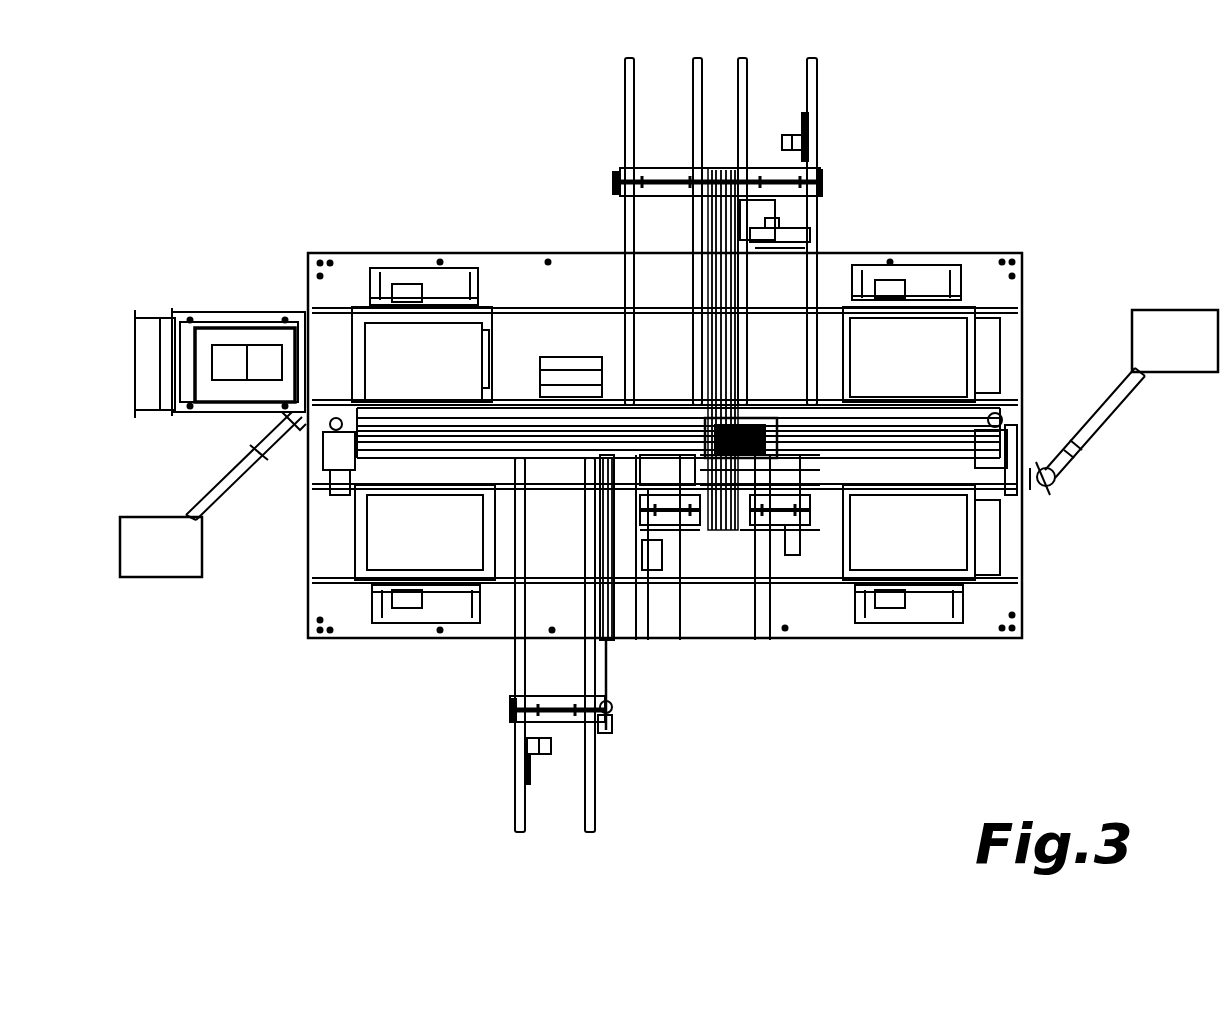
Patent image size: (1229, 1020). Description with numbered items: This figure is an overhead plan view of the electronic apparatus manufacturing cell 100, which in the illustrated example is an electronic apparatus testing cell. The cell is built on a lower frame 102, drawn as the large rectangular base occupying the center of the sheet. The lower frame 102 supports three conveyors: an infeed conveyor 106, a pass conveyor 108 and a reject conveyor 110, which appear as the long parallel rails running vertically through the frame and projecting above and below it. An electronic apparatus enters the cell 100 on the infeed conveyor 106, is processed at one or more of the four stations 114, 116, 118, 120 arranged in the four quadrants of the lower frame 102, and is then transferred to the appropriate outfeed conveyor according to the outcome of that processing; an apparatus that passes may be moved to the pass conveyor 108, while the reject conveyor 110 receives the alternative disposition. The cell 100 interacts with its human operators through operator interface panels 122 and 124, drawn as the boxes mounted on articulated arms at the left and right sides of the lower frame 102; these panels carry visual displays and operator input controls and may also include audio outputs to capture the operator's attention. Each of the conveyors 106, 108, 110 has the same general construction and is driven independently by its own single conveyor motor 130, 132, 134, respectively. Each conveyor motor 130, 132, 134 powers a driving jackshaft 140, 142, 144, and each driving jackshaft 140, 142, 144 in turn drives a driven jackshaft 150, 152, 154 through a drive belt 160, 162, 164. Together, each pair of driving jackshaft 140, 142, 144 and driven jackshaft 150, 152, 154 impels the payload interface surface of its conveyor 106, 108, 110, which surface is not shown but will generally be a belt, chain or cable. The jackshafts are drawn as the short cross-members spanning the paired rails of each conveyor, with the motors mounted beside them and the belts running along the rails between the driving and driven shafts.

The electronic apparatus manufacturing cell 100 is at (316, 98).
The lower frame 102 is at (1024, 600).
The infeed conveyor 106 is at (625, 88).
The pass conveyor 108 is at (515, 817).
The reject conveyor 110 is at (816, 74).
The station 114 is at (422, 335).
The station 116 is at (921, 333).
The station 118 is at (425, 554).
The station 120 is at (921, 554).
The operator interface panel 122 is at (213, 494).
The operator interface panel 124 is at (1124, 402).
The conveyor motor 130 is at (645, 560).
The conveyor motor 132 is at (528, 750).
The conveyor motor 134 is at (806, 143).
The driving jackshaft 140 is at (672, 530).
The driving jackshaft 142 is at (515, 710).
The driving jackshaft 144 is at (818, 181).
The driven jackshaft 150 is at (618, 182).
The driven jackshaft 152 is at (560, 372).
The driven jackshaft 154 is at (782, 557).
The drive belt 160 is at (707, 217).
The drive belt 162 is at (612, 680).
The drive belt 164 is at (752, 204).